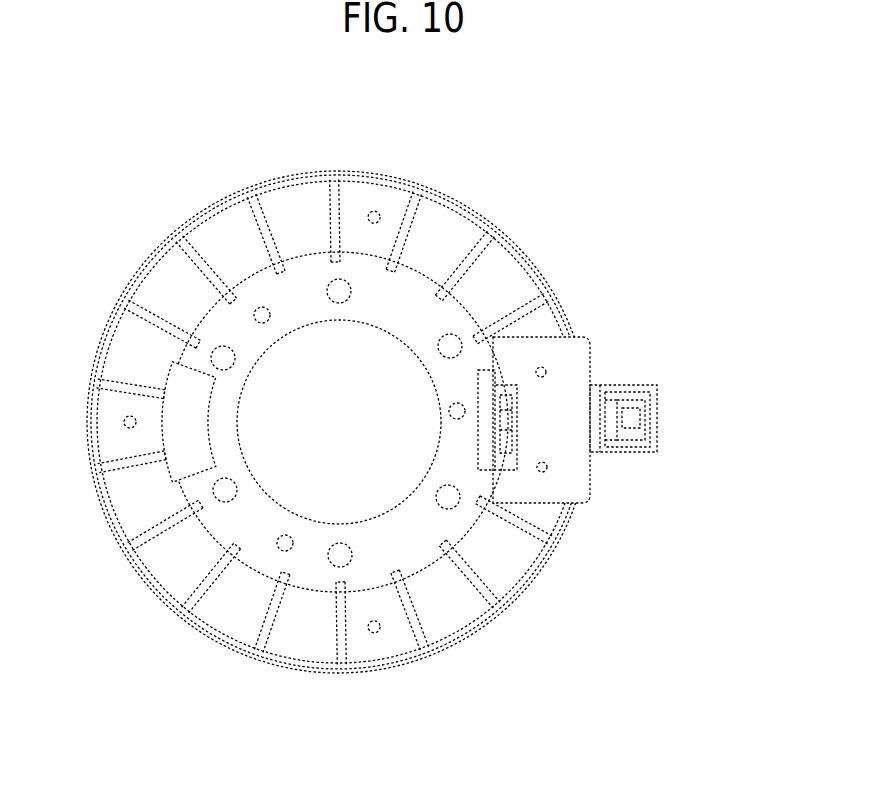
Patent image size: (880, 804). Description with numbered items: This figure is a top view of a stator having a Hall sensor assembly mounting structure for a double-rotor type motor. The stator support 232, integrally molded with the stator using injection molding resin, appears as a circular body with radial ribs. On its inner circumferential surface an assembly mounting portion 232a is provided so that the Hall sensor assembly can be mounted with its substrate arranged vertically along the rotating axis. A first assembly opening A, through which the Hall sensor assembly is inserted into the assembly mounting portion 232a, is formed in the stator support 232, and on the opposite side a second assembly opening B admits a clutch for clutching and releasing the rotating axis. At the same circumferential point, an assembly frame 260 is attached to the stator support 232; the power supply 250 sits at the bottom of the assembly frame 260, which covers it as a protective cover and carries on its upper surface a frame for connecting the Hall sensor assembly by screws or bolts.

The stator support 232 is at (466, 195).
The assembly mounting portion 232a is at (520, 402).
The power supply 250 is at (637, 385).
The assembly frame 260 is at (592, 476).
The first assembly opening A is at (503, 392).
The second assembly opening B is at (182, 395).